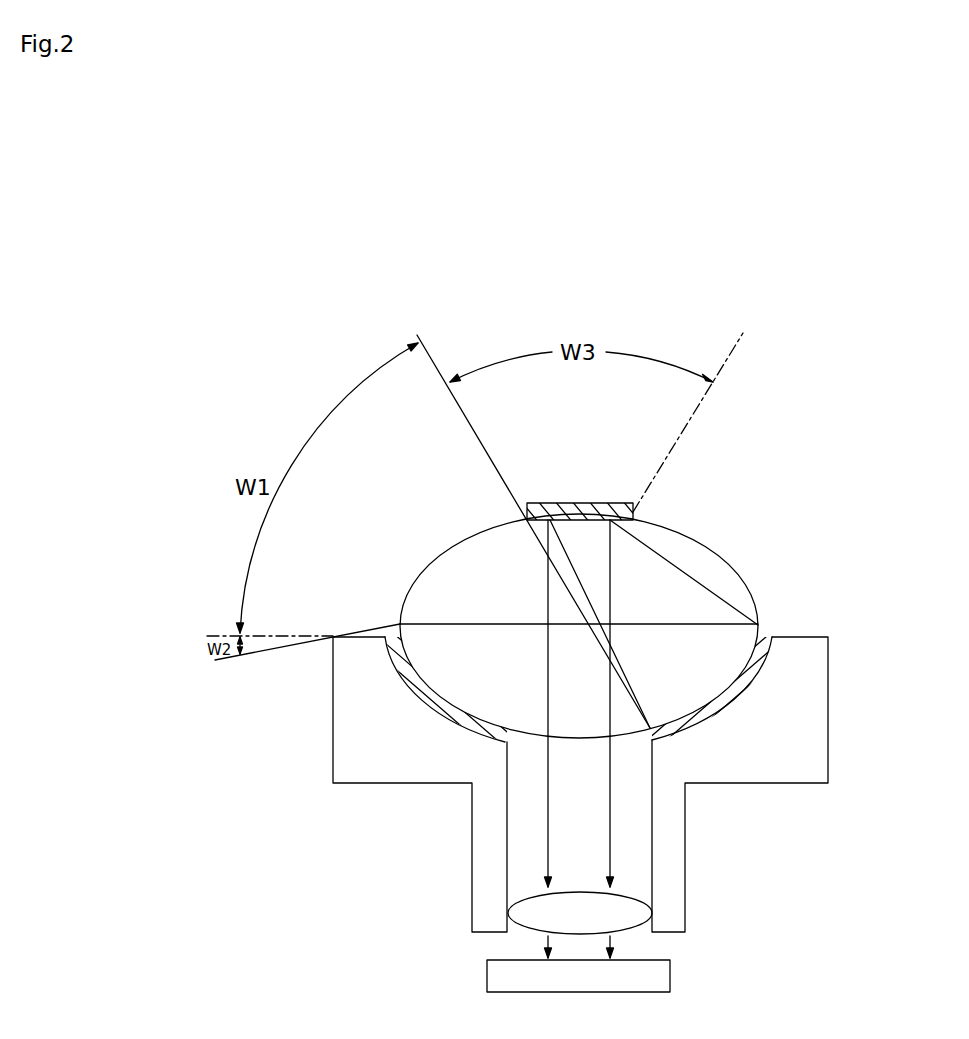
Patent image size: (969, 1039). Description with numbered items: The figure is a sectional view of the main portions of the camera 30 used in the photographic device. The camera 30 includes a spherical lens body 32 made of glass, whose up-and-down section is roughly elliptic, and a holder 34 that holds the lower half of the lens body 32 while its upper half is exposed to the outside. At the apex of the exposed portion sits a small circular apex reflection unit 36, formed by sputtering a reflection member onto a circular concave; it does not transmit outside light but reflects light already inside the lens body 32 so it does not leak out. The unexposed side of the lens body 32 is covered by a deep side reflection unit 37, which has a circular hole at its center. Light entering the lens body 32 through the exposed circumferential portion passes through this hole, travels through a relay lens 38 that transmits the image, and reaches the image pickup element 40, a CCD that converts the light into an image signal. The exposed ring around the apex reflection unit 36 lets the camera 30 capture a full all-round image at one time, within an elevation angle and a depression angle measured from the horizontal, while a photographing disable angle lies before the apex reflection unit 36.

The camera 30 is at (762, 423).
The lens body 32 is at (713, 562).
The holder 34 is at (808, 673).
The apex reflection unit 36 is at (582, 512).
The deep side reflection unit 37 is at (765, 640).
The relay lens 38 is at (640, 913).
The image pickup element 40 is at (655, 970).